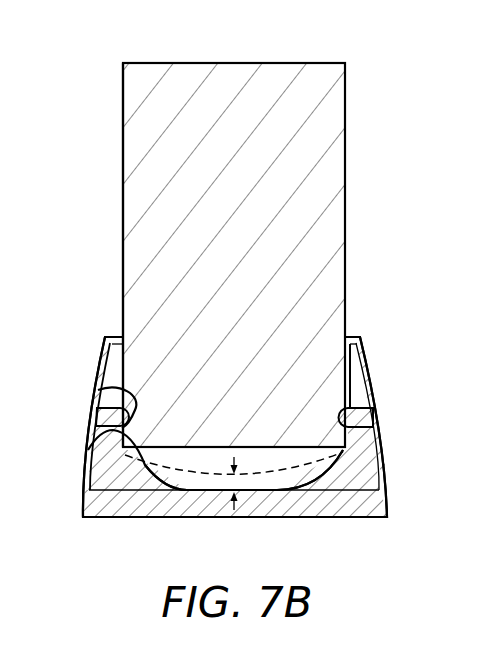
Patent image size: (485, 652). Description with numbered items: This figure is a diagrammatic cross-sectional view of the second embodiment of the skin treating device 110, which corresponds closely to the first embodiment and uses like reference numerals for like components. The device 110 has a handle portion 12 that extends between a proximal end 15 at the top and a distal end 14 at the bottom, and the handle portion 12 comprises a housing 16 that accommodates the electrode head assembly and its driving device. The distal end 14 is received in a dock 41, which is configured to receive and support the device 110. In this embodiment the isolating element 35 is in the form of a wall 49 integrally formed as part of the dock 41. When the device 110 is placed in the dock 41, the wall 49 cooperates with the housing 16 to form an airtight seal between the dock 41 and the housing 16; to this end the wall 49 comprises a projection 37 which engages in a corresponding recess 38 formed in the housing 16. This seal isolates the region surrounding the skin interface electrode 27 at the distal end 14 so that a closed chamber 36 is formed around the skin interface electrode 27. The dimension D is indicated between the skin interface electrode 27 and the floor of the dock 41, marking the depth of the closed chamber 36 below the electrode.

The skin treating device 110 is at (92, 72).
The proximal end 15 is at (353, 75).
The handle portion 12 is at (347, 192).
The housing 16 is at (123, 300).
The dock 41 is at (385, 363).
The recess 38 is at (102, 395).
The projection 37 is at (103, 417).
The distal end 14 is at (95, 450).
The isolating element 35 is at (387, 478).
The wall 49 is at (152, 480).
The skin interface electrode 27 is at (267, 478).
The closed chamber 36 is at (305, 477).
The depth D is at (230, 483).